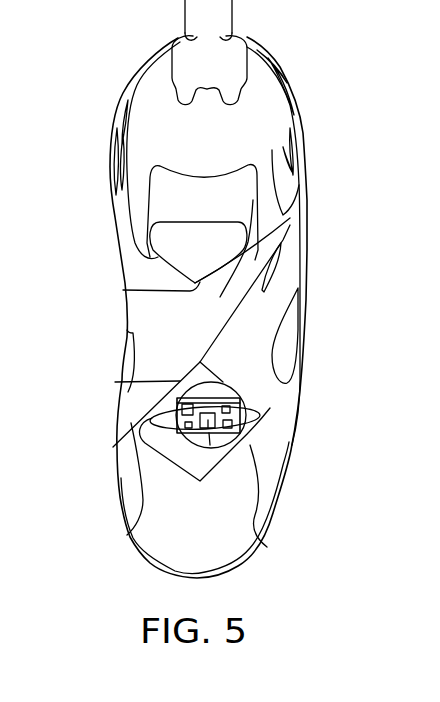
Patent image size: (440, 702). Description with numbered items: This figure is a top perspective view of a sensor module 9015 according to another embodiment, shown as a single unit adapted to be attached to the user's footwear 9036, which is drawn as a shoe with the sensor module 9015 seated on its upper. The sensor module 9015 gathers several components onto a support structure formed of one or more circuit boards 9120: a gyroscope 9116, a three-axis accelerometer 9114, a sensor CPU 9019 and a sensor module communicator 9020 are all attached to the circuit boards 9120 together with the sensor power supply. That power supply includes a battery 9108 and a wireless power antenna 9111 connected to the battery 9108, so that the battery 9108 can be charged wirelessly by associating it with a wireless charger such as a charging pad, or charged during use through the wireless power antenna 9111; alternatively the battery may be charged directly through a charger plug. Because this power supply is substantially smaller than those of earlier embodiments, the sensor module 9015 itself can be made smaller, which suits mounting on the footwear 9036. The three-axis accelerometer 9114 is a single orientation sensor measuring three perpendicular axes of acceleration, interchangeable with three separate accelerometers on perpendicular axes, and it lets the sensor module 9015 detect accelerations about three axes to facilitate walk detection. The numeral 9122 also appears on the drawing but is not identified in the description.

The gyroscope 9116 is at (117, 452).
The heel tab 9122 is at (306, 131).
The sensor CPU 9019 is at (194, 450).
The circuit boards 9120 is at (115, 382).
The footwear 9036 is at (305, 343).
The battery 9108 is at (185, 388).
The sensor module communicator 9020 is at (190, 433).
The wireless power antenna 9111 is at (243, 400).
The sensor module 9015 is at (257, 411).
The three-axis accelerometer 9114 is at (233, 443).